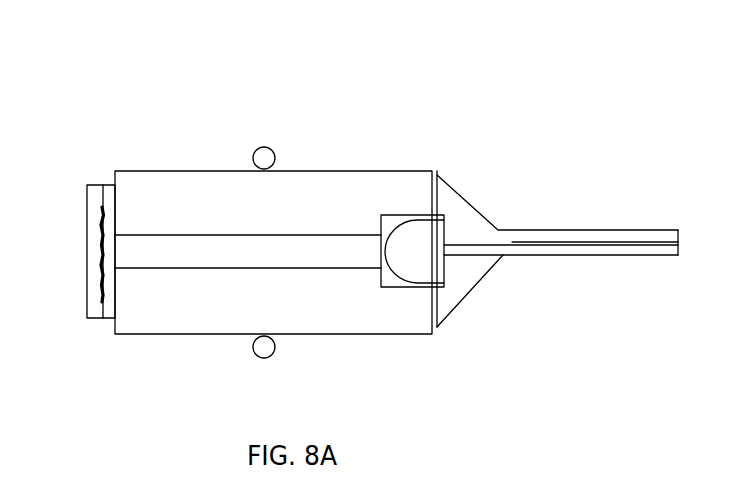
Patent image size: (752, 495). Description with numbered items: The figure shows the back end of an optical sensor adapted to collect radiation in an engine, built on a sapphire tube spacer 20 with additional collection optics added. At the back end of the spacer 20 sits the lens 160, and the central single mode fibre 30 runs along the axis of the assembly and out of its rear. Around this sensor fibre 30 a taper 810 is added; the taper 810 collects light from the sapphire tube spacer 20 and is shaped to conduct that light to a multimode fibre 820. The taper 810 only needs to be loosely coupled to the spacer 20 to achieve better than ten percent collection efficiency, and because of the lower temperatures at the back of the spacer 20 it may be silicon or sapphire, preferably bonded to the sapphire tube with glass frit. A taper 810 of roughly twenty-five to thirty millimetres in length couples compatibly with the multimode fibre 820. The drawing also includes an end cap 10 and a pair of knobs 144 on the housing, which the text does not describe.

The end cap 10 is at (93, 185).
The spacer 20 is at (203, 198).
The knobs 144 is at (263, 147).
The lens 160 is at (412, 250).
The taper 810 is at (460, 212).
The multimode fibre 820 is at (531, 244).
The single mode fibre 30 is at (538, 254).